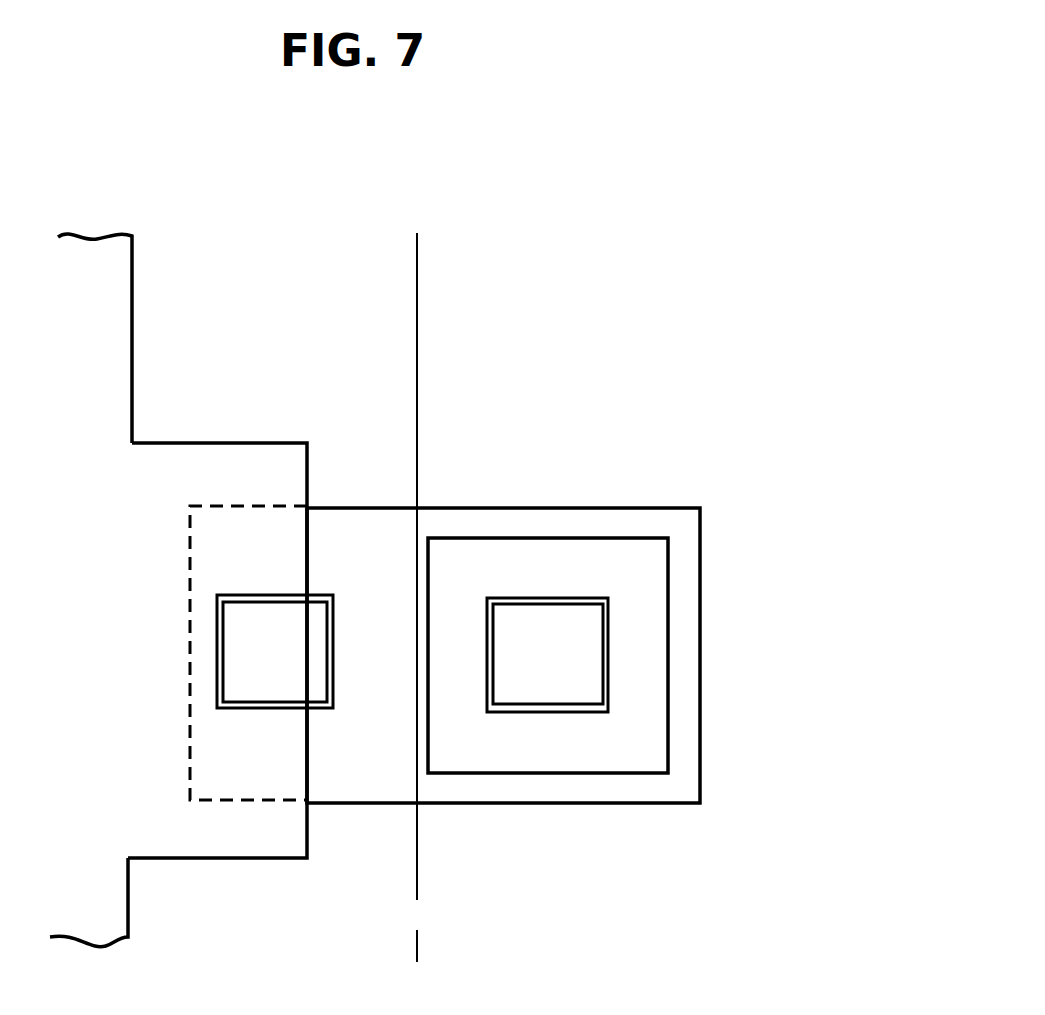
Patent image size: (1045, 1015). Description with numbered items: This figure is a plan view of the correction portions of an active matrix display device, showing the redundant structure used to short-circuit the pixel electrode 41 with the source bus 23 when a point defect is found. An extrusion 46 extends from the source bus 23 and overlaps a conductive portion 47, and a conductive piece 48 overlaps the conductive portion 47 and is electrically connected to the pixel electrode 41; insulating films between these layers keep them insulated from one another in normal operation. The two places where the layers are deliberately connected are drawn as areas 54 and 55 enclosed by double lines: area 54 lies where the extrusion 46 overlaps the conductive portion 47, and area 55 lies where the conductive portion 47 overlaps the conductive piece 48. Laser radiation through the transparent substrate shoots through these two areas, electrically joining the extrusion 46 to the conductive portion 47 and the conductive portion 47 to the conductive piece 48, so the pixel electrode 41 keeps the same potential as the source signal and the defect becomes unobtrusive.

The source bus 23 is at (128, 302).
The extrusion 46 is at (187, 460).
The pixel electrode 41 is at (613, 449).
The conductive portion 47 is at (686, 521).
The conductive piece 48 is at (658, 648).
The area 54 is at (318, 692).
The area 55 is at (552, 697).